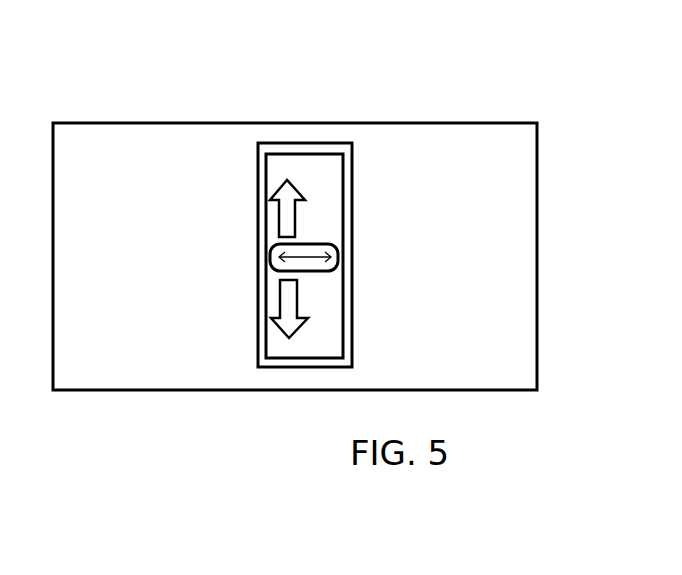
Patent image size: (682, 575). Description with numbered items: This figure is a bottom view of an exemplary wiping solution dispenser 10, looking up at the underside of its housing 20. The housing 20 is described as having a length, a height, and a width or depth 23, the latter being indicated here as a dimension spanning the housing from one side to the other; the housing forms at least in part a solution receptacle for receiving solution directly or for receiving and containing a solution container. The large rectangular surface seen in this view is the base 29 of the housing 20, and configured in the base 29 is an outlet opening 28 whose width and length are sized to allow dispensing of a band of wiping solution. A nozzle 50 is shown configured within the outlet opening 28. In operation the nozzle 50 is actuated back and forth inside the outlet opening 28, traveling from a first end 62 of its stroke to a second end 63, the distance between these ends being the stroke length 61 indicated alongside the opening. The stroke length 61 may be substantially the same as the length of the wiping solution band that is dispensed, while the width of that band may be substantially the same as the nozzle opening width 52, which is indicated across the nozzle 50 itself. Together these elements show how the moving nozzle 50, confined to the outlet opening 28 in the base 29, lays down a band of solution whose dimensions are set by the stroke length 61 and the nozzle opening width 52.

The wiping solution dispenser 10 is at (116, 115).
The housing 20 is at (197, 138).
The base 29 is at (438, 190).
The outlet opening 28 is at (348, 197).
The first end 62 is at (282, 147).
The nozzle 50 is at (285, 147).
The nozzle opening width 52 is at (307, 258).
The second end 63 is at (268, 365).
The stroke length 61 is at (232, 145).
The width or depth 23 is at (547, 123).